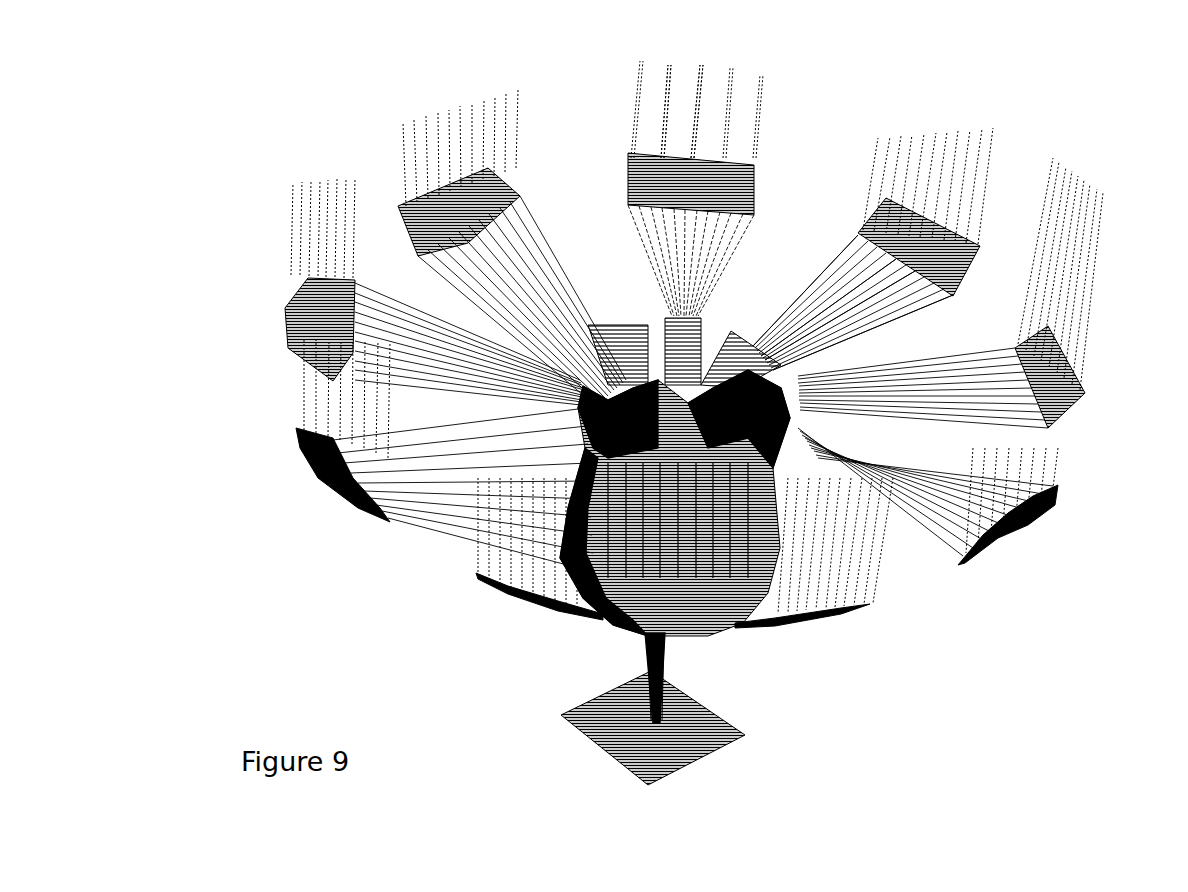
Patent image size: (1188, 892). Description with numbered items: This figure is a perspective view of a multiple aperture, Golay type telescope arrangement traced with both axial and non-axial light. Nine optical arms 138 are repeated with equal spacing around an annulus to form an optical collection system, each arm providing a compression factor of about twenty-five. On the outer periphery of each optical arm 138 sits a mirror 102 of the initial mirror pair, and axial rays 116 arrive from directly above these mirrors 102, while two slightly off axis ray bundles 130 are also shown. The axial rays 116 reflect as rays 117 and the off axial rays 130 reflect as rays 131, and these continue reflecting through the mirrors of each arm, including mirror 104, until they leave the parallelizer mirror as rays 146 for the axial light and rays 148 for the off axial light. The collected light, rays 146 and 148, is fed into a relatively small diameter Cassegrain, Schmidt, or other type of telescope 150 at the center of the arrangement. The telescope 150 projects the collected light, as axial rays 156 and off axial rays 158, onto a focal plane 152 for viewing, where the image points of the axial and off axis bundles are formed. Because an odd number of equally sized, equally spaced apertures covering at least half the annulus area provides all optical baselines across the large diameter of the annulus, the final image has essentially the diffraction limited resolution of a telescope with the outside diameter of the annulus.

The optical arm 138 is at (378, 166).
The mirror 102 is at (604, 178).
The mirror 104 is at (651, 306).
The axial rays 116 is at (858, 142).
The off axial rays 130 is at (797, 118).
The rays 117 is at (783, 290).
The rays 131 is at (784, 292).
The rays 146 is at (708, 600).
The rays 148 is at (708, 600).
The telescope 150 is at (655, 515).
The focal plane 152 is at (636, 752).
The axial rays 156 is at (678, 650).
The off axial rays 158 is at (676, 648).